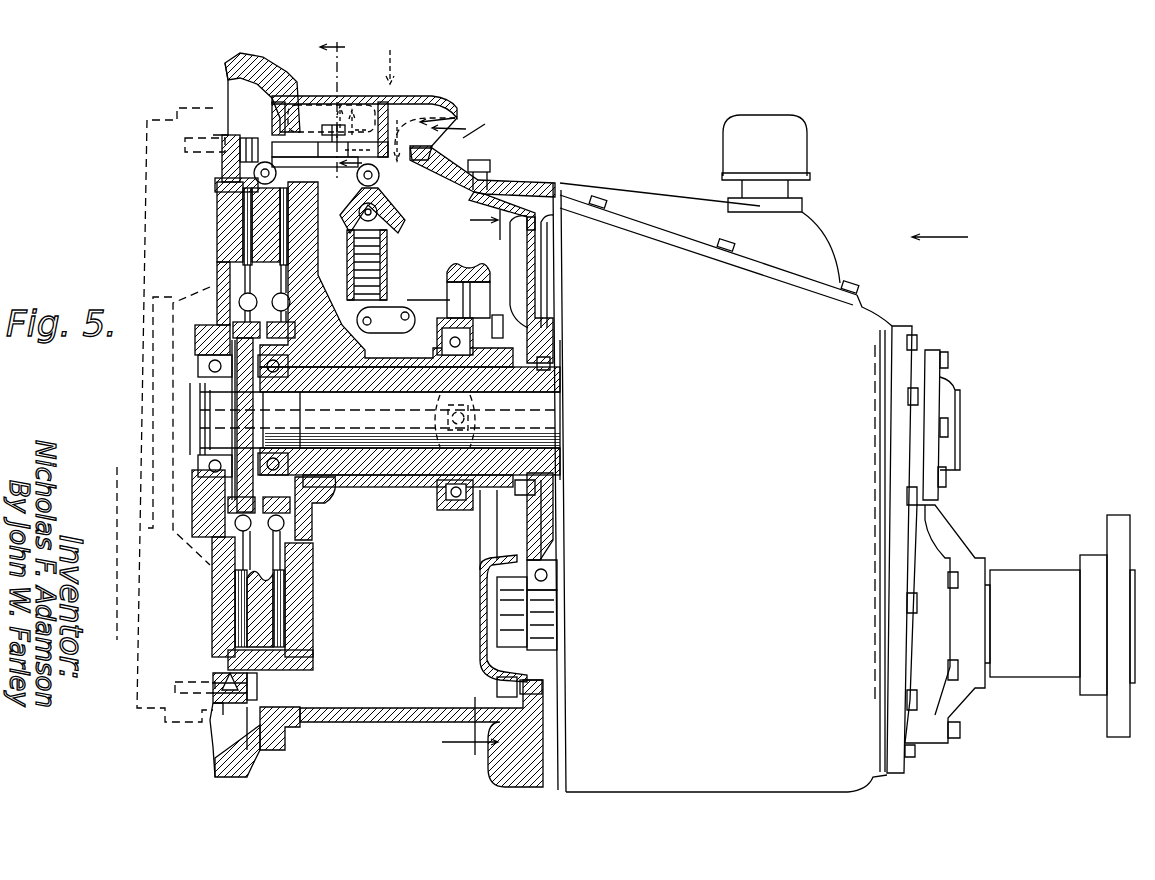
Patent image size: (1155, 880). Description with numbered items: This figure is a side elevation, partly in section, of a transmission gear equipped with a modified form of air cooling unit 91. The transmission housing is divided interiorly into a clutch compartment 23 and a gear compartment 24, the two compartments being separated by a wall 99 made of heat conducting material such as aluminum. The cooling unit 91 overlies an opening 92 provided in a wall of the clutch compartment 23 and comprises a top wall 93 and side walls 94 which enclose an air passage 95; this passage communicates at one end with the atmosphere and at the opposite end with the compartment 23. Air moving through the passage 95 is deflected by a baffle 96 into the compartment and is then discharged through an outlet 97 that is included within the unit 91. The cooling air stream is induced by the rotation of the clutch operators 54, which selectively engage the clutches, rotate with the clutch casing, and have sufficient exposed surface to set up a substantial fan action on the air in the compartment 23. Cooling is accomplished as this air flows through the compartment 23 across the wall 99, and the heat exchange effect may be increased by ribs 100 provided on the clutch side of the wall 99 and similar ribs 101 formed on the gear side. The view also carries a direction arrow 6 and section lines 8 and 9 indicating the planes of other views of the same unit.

The direction of view arrow 6 is at (940, 226).
The section line 8- 8 is at (345, 99).
The section line 9- 9 is at (471, 481).
The clutch compartment 23 is at (405, 652).
The gear compartment 24 is at (545, 197).
The clutch operators 54 is at (396, 259).
The cooling unit 91 is at (397, 56).
The opening 92 is at (405, 150).
The top wall 93 is at (405, 96).
The side walls 94 is at (440, 112).
The air passage 95 is at (470, 117).
The baffle 96 is at (382, 110).
The outlet 97 is at (313, 114).
The wall 99 is at (533, 297).
The ribs 100 is at (520, 268).
The ribs 101 is at (545, 280).